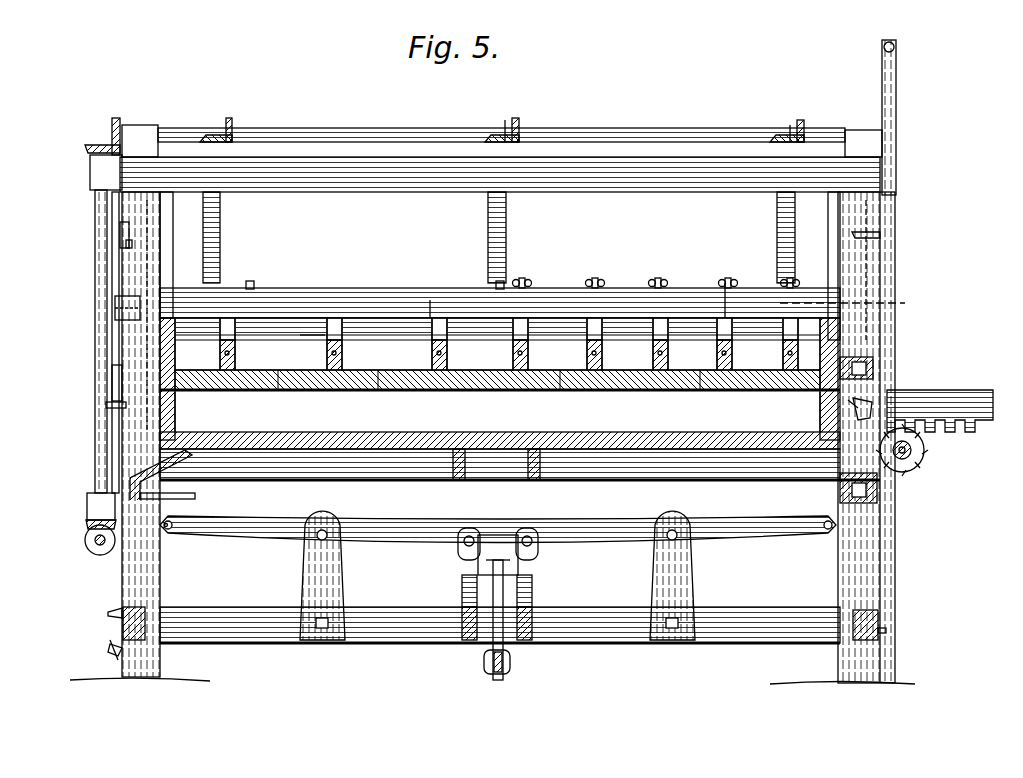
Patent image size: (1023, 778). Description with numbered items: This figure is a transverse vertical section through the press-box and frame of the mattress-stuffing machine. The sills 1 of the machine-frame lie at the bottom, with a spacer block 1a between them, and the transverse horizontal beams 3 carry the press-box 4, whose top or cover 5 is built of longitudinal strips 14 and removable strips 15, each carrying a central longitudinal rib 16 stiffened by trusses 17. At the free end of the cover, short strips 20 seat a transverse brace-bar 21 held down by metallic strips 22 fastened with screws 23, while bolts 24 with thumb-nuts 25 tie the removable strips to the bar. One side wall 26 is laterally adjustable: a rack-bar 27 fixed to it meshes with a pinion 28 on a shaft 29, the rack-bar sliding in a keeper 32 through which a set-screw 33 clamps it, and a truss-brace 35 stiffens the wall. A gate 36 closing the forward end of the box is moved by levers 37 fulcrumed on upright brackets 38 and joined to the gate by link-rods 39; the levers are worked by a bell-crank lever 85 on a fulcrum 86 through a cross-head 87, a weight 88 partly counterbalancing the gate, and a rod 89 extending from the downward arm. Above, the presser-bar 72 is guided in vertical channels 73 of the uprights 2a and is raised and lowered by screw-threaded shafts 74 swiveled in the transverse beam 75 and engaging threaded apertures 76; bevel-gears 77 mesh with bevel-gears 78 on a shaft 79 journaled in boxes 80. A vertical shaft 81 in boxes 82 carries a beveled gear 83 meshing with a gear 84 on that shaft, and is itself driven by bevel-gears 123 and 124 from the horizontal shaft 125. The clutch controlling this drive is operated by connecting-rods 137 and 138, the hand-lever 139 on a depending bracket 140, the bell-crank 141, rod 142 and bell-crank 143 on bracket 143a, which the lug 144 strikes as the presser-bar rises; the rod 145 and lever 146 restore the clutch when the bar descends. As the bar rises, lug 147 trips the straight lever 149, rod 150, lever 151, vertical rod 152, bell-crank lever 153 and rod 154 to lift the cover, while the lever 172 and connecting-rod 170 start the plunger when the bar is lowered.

The sills 1 is at (140, 610).
The spacer block 1a is at (468, 480).
The uprights 2a is at (878, 262).
The transverse horizontal beams 3 is at (520, 475).
The press-box 4 is at (497, 412).
The top or cover 5 is at (410, 390).
The longitudinal strips 14 is at (687, 409).
The removable strips 15 is at (200, 379).
The central longitudinal rib 16 is at (260, 328).
The trusses 17 is at (728, 318).
The short strips 20 is at (385, 318).
The transverse brace-bar 21 is at (430, 300).
The metallic strips 22 is at (345, 320).
The screws 23 is at (228, 318).
The bolts 24 is at (522, 278).
The thumb-nuts 25 is at (600, 278).
The side wall 26 is at (818, 402).
The rack-bar 27 is at (985, 390).
The pinion 28 is at (912, 455).
The shaft 29 is at (912, 462).
The keeper 32 is at (872, 400).
The set-screw 33 is at (870, 410).
The truss-brace 35 is at (873, 365).
The gate 36 is at (357, 392).
The levers 37 is at (384, 518).
The upright brackets 38 is at (497, 575).
The link-rods 39 is at (190, 497).
The presser-bar 72 is at (300, 335).
The vertical channels 73 is at (168, 258).
The screw-threaded shafts 74 is at (220, 215).
The horizontal transverse beam 75 is at (378, 192).
The threaded apertures 76 is at (250, 281).
The bevel-gears 77 is at (505, 120).
The bevel-gears 78 is at (230, 117).
The shaft 79 is at (501, 125).
The boxes 80 is at (140, 128).
The vertical shaft 81 is at (95, 343).
The boxes 82 is at (90, 172).
The beveled gear 83 is at (85, 149).
The gear 84 is at (112, 122).
The bell-crank lever 85 is at (493, 620).
The fulcrum 86 is at (532, 592).
The cross-head 87 is at (487, 530).
The weight 88 is at (518, 572).
The rod 89 is at (500, 674).
The bevel-gear 123 is at (92, 552).
The bevel-gear 124 is at (88, 530).
The horizontal shaft 125 is at (100, 546).
The connecting-rod 137 is at (108, 614).
The connecting-rod 138 is at (108, 650).
The hand-lever 139 is at (118, 435).
The depending bracket 140 is at (128, 470).
The bell-crank 141 is at (118, 660).
The rod 142 is at (140, 585).
The bell-crank 143 is at (120, 236).
The bracket 143a is at (126, 246).
The lug 144 is at (115, 310).
The rod 145 is at (106, 405).
The lever 146 is at (112, 380).
The lug 147 is at (858, 303).
The straight lever 149 is at (880, 232).
The rod 150 is at (896, 118).
The straight lever 151 is at (894, 45).
The vertical rod 152 is at (895, 548).
The bell-crank lever 153 is at (880, 612).
The rod 154 is at (886, 630).
The connecting-rod 170 is at (195, 490).
The lever 172 is at (196, 432).